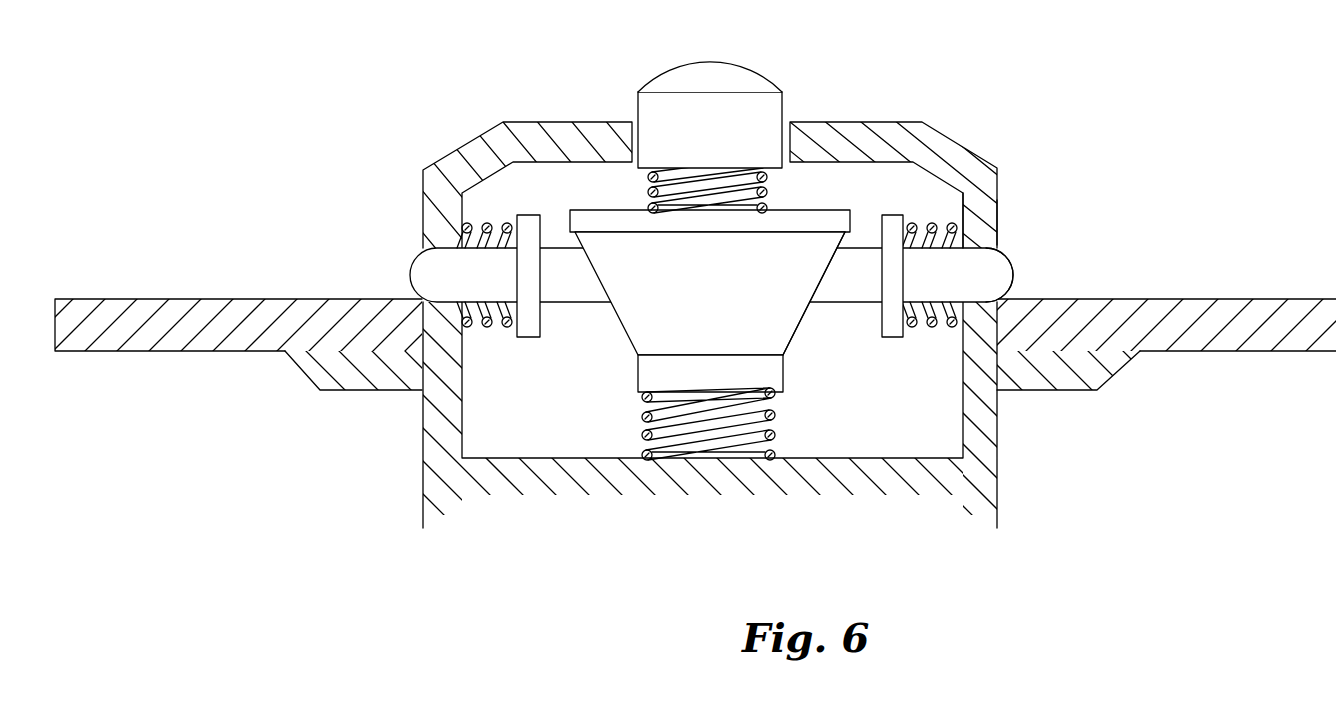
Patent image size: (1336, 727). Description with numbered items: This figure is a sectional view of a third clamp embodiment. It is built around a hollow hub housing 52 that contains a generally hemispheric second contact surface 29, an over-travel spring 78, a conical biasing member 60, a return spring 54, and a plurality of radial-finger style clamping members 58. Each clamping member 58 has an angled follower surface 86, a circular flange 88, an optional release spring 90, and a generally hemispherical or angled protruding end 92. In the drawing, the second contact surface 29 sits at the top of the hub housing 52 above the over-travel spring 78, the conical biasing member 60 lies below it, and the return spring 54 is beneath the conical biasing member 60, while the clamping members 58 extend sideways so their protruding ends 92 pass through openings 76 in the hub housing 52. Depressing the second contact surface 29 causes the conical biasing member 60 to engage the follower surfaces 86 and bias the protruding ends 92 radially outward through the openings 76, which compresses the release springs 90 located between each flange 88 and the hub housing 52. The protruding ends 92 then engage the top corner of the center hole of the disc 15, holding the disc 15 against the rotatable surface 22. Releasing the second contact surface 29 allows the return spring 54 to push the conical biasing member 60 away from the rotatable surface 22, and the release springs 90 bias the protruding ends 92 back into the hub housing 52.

The disc 15 is at (213, 342).
The rotatable surface 22 is at (373, 377).
The second contact surface 29 is at (683, 75).
The hub housing 52 is at (817, 135).
The return spring 54 is at (698, 418).
The clamping member 58 is at (970, 267).
The conical biasing member 60 is at (732, 289).
The opening 76 is at (990, 233).
The over-travel spring 78 is at (767, 193).
The angled follower surface 86 is at (833, 258).
The circular flange 88 is at (893, 222).
The release spring 90 is at (930, 220).
The protruding end 92 is at (1013, 276).